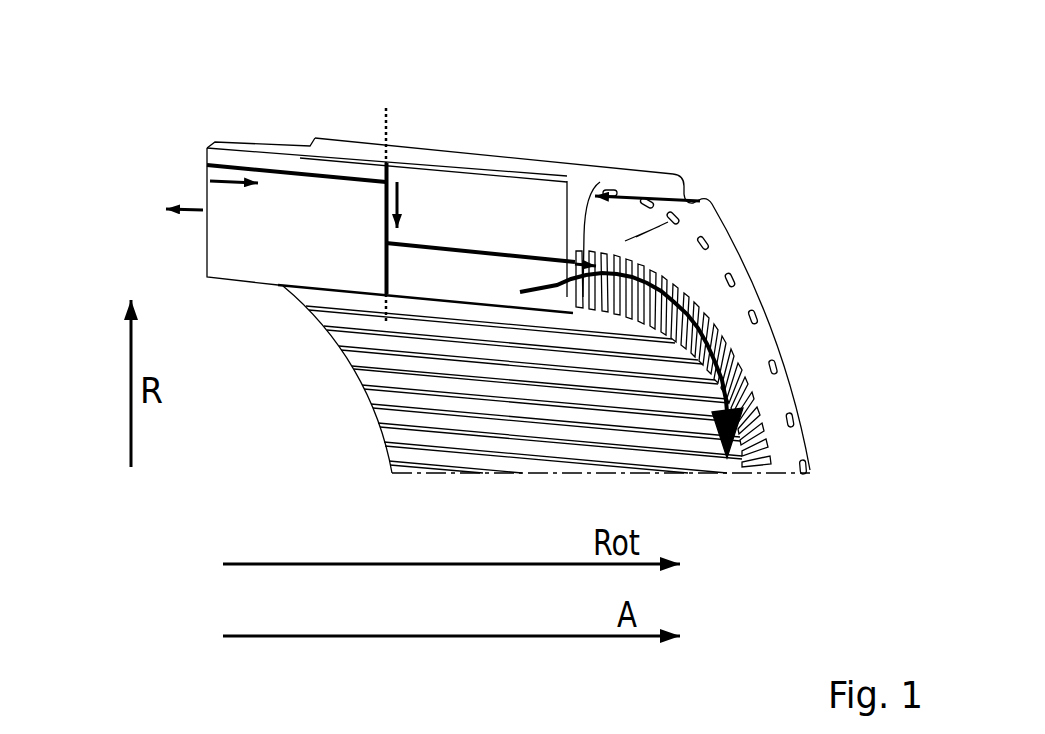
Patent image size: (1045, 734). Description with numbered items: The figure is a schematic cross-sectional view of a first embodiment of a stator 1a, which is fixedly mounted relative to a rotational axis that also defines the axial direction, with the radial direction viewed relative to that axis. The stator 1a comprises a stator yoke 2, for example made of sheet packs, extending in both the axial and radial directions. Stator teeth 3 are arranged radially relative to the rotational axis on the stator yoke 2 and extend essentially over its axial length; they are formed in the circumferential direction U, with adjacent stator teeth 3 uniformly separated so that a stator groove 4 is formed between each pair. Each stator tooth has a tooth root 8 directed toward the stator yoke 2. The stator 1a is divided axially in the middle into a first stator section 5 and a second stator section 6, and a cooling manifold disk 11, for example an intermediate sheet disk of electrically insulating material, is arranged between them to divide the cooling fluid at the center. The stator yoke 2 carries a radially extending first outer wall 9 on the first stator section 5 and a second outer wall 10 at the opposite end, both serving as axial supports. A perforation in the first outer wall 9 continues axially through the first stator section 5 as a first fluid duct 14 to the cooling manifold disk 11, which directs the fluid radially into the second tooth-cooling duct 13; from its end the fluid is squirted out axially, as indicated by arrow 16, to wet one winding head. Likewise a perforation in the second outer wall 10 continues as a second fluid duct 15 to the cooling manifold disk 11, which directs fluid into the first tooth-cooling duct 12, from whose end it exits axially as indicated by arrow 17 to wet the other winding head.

The stator 1a is at (138, 102).
The stator yoke 2 is at (482, 200).
The stator teeth 3 is at (417, 432).
The stator groove 4 is at (747, 385).
The first stator section 5 is at (425, 158).
The second stator section 6 is at (252, 145).
The tooth root 8 is at (733, 350).
The first outer wall 9 is at (700, 265).
The second outer wall 10 is at (203, 247).
The cooling manifold disk 11 is at (382, 213).
The first tooth-cooling duct 12 is at (522, 250).
The second tooth-cooling duct 13 is at (203, 203).
The first fluid duct 14 is at (593, 181).
The second fluid duct 15 is at (287, 173).
The arrow 16 is at (176, 206).
The arrow 17 is at (595, 212).
The circumferential direction U is at (700, 300).